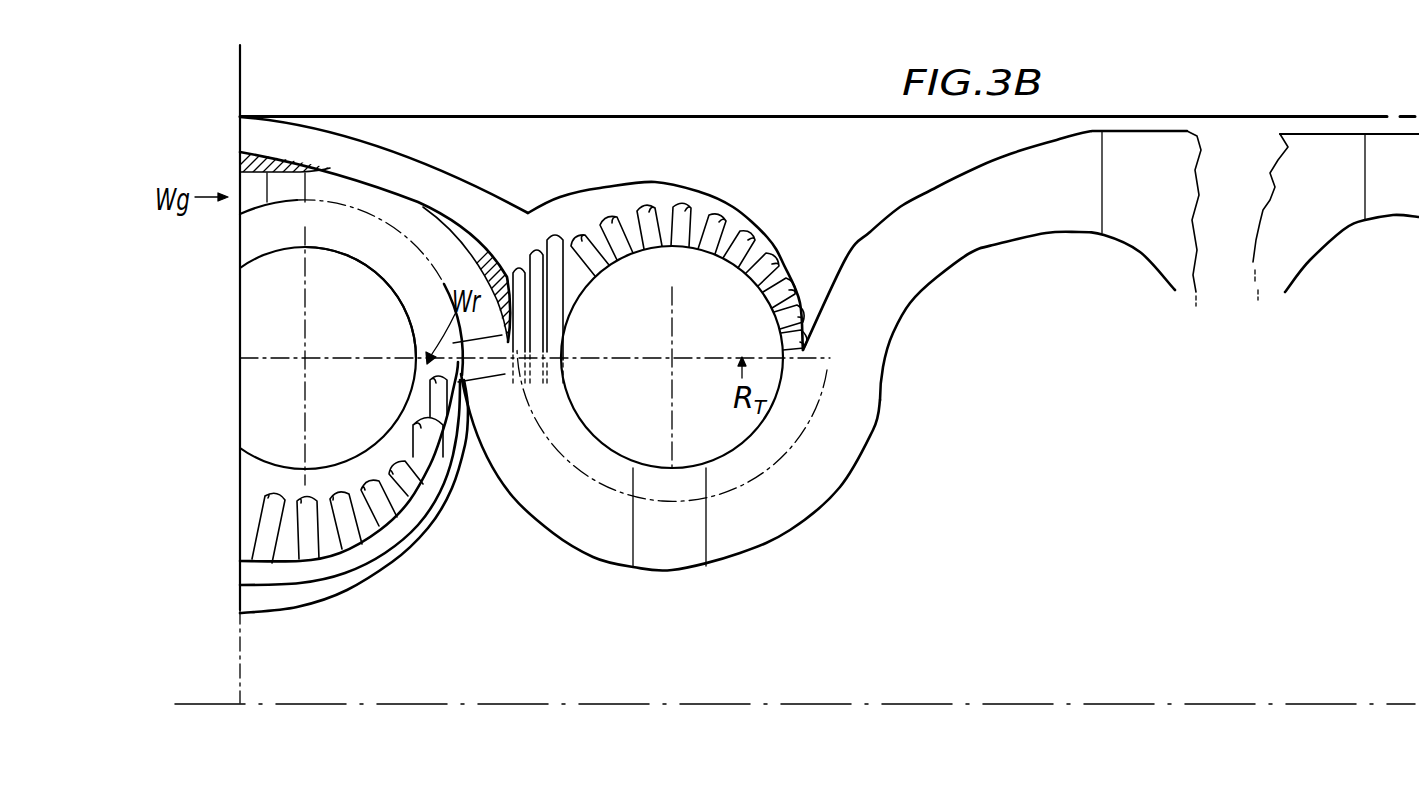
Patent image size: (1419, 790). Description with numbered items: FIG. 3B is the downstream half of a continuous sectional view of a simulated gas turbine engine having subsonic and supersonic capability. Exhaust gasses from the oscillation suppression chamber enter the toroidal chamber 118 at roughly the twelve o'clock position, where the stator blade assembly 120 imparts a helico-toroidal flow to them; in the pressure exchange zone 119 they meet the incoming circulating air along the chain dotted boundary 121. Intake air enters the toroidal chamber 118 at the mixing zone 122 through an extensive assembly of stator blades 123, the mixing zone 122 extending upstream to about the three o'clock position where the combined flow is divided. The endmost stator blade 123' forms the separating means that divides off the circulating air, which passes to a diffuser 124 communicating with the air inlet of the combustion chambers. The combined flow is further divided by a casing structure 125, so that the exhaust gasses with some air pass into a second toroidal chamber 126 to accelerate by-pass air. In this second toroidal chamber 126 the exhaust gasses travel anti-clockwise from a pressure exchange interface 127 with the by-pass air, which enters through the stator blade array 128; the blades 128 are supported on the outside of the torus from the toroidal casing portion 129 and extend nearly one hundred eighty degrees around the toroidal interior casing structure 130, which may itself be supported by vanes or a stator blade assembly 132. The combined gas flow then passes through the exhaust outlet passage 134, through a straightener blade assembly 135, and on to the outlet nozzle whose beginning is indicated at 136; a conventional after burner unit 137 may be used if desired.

The toroidal chamber 118 is at (267, 240).
The pressure exchange zone 119 is at (412, 310).
The stator blade assembly 120 is at (300, 205).
The chain dotted boundary 121 is at (383, 226).
The mixing zone 122 is at (270, 468).
The stator blades 123 is at (349, 487).
The endmost stator blade 123' is at (401, 396).
The diffuser 124 is at (427, 523).
The casing structure 125 is at (470, 468).
The second toroidal chamber 126 is at (565, 418).
The pressure exchange interface 127 is at (547, 468).
The stator blade array 128 is at (657, 207).
The toroidal casing portion 129 is at (568, 198).
The toroidal interior casing structure 130 is at (595, 278).
The vanes or stator blade assembly 132 is at (700, 556).
The exhaust outlet passage 134 is at (996, 233).
The straightener blade assembly 135 is at (1143, 242).
The outlet nozzle 136 is at (1320, 232).
The after burner unit 137 is at (1229, 172).